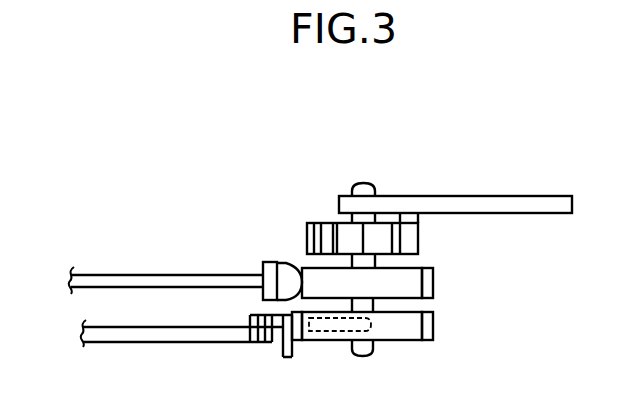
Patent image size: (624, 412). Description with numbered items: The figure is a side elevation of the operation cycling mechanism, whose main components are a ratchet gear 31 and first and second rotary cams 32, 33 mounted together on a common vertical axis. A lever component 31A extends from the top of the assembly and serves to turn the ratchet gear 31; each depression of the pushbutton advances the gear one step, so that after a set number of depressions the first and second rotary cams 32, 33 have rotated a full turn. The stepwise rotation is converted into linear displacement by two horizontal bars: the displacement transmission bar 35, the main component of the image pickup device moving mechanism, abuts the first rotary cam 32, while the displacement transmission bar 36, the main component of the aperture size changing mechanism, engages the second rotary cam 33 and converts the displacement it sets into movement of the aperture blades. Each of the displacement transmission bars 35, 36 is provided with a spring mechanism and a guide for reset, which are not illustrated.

The lever component 31A is at (500, 202).
The ratchet gear 31 is at (427, 237).
The first rotary cam 32 is at (412, 285).
The second rotary cam 33 is at (412, 327).
The displacement transmission bar 35 is at (83, 284).
The displacement transmission bar 36 is at (156, 334).